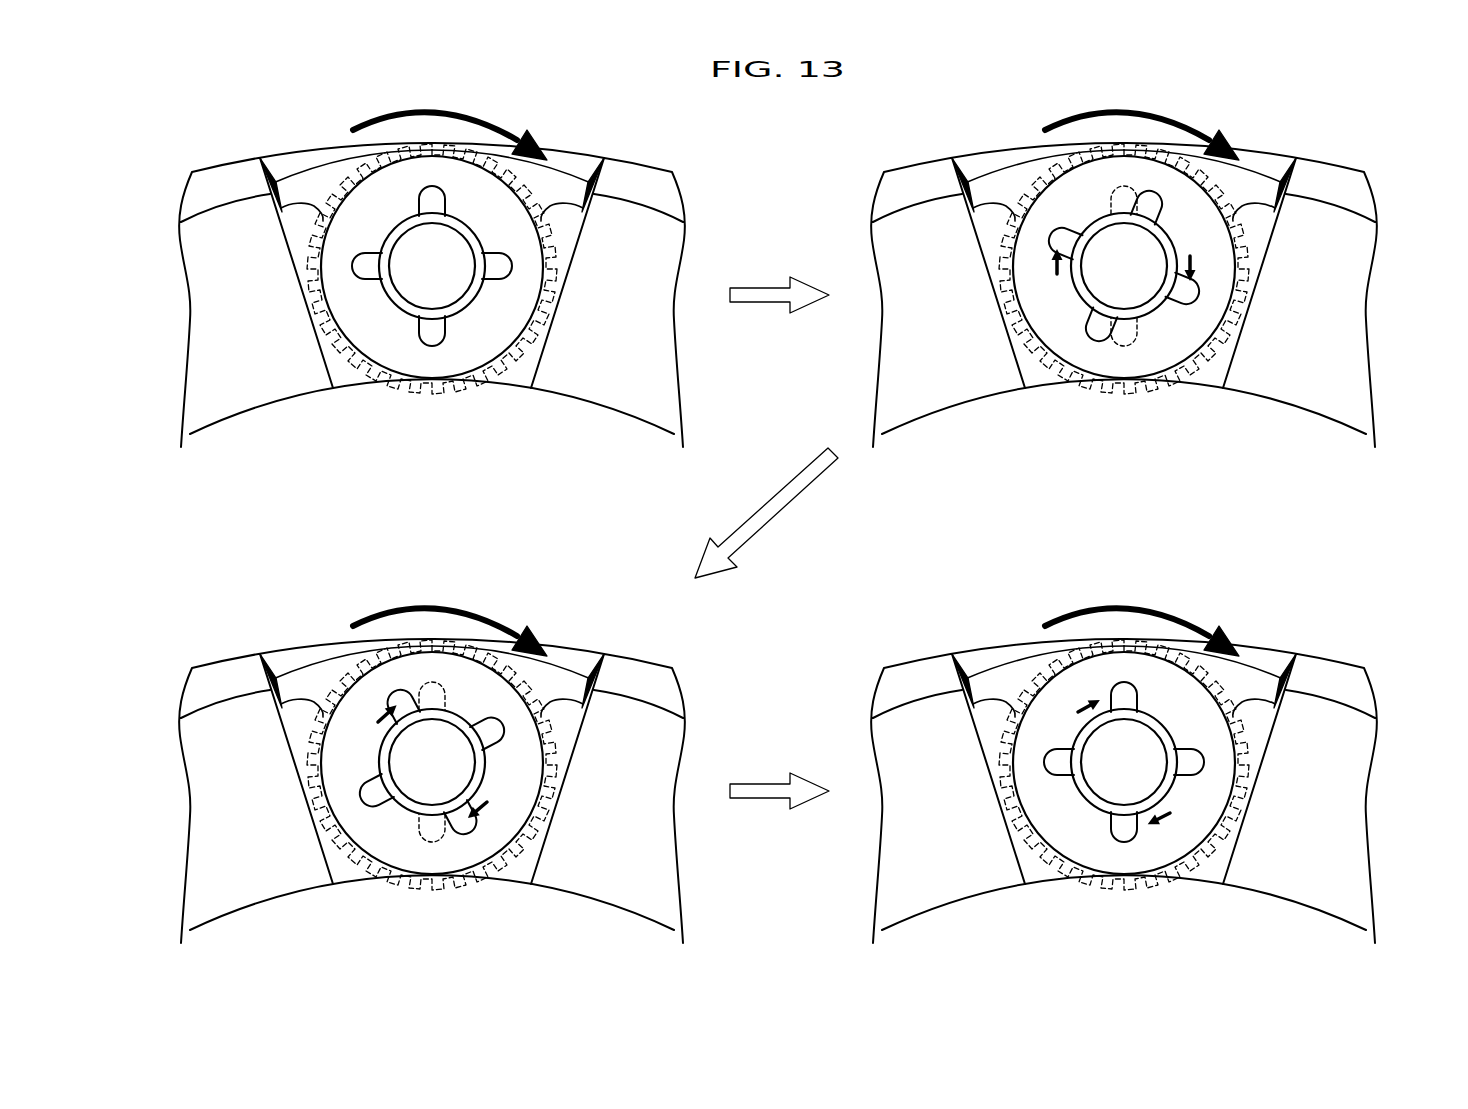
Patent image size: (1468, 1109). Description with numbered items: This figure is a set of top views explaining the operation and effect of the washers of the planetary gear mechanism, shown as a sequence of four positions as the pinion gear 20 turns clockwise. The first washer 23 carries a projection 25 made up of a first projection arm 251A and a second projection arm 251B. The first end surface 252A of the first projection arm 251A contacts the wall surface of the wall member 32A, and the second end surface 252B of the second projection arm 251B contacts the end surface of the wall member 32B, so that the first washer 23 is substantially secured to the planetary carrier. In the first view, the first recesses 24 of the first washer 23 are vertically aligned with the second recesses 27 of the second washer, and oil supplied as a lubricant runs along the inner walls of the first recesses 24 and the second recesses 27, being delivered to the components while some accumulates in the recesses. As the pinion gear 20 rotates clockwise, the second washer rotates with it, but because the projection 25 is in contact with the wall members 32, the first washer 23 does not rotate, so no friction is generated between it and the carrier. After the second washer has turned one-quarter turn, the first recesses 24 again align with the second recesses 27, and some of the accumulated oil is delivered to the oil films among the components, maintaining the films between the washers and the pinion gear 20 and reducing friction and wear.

The pinion gear 20 is at (431, 398).
The first washer 23 is at (481, 337).
The first recesses 24 is at (433, 190).
The projection 25 is at (818, 487).
The second recesses 27 is at (1249, 924).
The wall members 32 is at (792, 523).
The wall member 32A is at (642, 172).
The wall member 32B is at (222, 172).
The first projection arm 251A is at (565, 190).
The second projection arm 251B is at (301, 190).
The first end surface 252A is at (582, 211).
The second end surface 252B is at (282, 211).